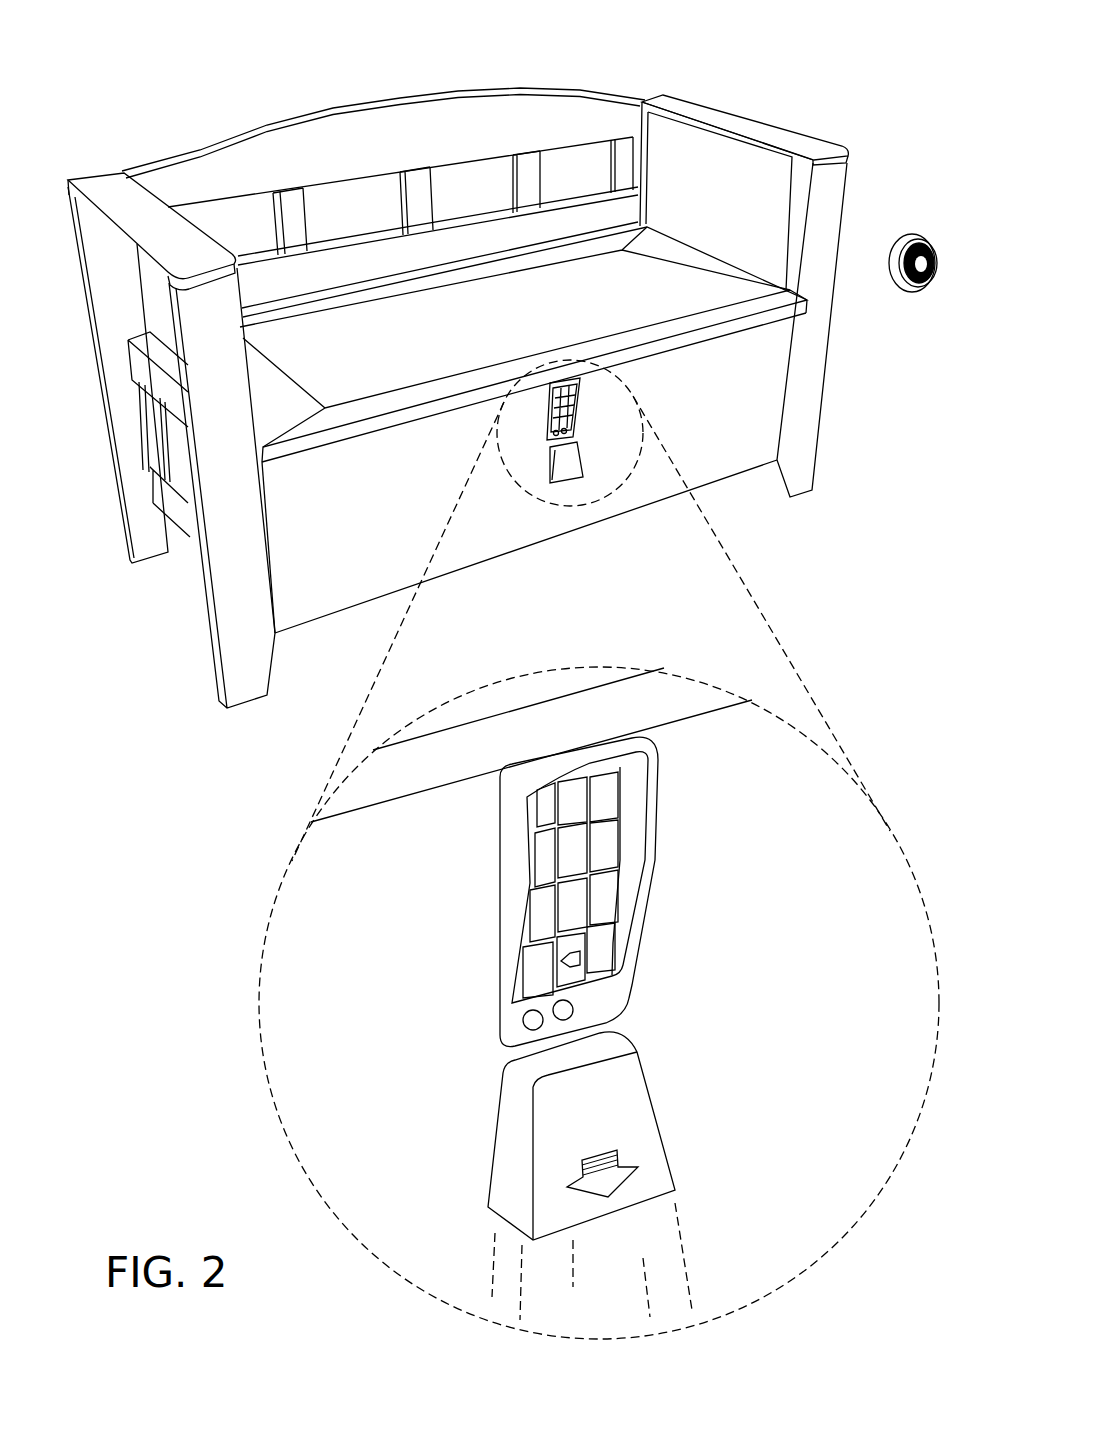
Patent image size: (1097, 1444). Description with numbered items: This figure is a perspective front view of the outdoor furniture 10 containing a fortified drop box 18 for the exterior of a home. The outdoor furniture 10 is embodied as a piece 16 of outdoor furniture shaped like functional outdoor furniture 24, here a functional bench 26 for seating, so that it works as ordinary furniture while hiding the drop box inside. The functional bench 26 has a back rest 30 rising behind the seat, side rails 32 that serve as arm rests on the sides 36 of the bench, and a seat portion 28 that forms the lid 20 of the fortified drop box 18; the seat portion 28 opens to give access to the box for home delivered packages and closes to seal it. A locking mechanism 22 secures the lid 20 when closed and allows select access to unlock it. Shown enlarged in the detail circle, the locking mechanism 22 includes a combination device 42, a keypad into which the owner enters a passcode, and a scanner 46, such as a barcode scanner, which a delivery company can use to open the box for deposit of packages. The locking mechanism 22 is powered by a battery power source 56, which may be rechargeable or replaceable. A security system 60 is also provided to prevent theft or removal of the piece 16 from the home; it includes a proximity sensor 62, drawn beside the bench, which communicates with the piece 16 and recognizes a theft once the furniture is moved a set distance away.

The outdoor furniture 10 is at (706, 43).
The piece of outdoor furniture 16 is at (550, 72).
The fortified drop box 18 is at (336, 580).
The lid 20 is at (388, 403).
The locking mechanism 22 is at (520, 416).
The functional outdoor furniture 24 is at (767, 172).
The functional bench 26 is at (770, 94).
The seat portion 28 is at (475, 331).
The back rest 30 is at (273, 142).
The side rails 32 is at (101, 190).
The sides 36 is at (865, 221).
The combination device 42 is at (583, 402).
The scanner 46 is at (572, 467).
The battery power source 56 is at (680, 975).
The security system 60 is at (862, 406).
The proximity sensor 62 is at (930, 240).